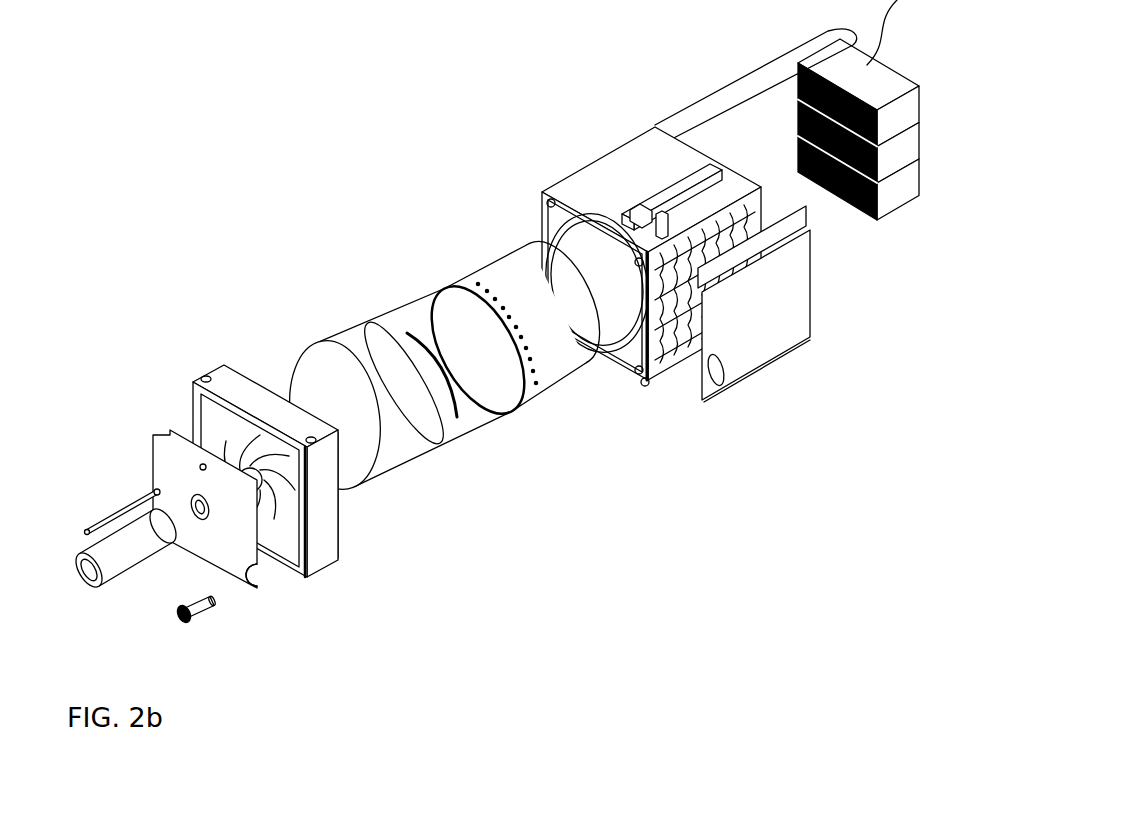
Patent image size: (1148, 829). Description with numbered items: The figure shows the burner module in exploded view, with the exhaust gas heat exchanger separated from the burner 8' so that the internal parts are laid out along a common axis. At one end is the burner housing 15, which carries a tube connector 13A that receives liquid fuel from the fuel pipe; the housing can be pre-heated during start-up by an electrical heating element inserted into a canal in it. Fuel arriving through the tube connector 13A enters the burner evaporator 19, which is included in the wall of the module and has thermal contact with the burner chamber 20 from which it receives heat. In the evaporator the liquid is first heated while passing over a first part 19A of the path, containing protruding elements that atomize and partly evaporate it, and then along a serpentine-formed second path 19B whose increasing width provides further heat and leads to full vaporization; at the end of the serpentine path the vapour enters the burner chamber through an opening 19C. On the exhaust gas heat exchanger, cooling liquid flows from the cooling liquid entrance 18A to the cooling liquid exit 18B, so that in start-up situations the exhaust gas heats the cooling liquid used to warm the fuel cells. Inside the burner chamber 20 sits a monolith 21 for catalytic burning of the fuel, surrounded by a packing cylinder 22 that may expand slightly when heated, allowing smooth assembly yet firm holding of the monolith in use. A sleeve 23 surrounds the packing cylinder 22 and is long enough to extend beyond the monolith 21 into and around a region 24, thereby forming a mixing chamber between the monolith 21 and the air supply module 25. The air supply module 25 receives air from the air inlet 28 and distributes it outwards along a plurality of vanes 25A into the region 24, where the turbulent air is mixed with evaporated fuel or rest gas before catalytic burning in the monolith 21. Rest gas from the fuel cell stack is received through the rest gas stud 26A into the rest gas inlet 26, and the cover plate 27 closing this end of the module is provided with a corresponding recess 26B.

The burner 8' is at (566, 264).
The tube connector 13A is at (700, 180).
The burner housing 15 is at (598, 158).
The cooling liquid entrance 18A is at (765, 72).
The cooling liquid exit 18B is at (852, 205).
The burner evaporator 19 is at (660, 377).
The first part of the path through the burner-evaporator 19A is at (753, 233).
The second path 19B is at (747, 337).
The opening 19C is at (735, 390).
The burner chamber 20 is at (612, 313).
The monolith 21 is at (328, 357).
The packing cylinder 22 is at (403, 317).
The sleeve 23 is at (510, 258).
The region 24 is at (352, 442).
The air supply module 25 is at (215, 380).
The vanes 25A is at (193, 412).
The rest gas inlet 26 is at (643, 380).
The rest gas stud 26A is at (207, 607).
The recess 26B is at (257, 583).
The cover plate 27 is at (155, 463).
The air inlet 28 is at (93, 587).